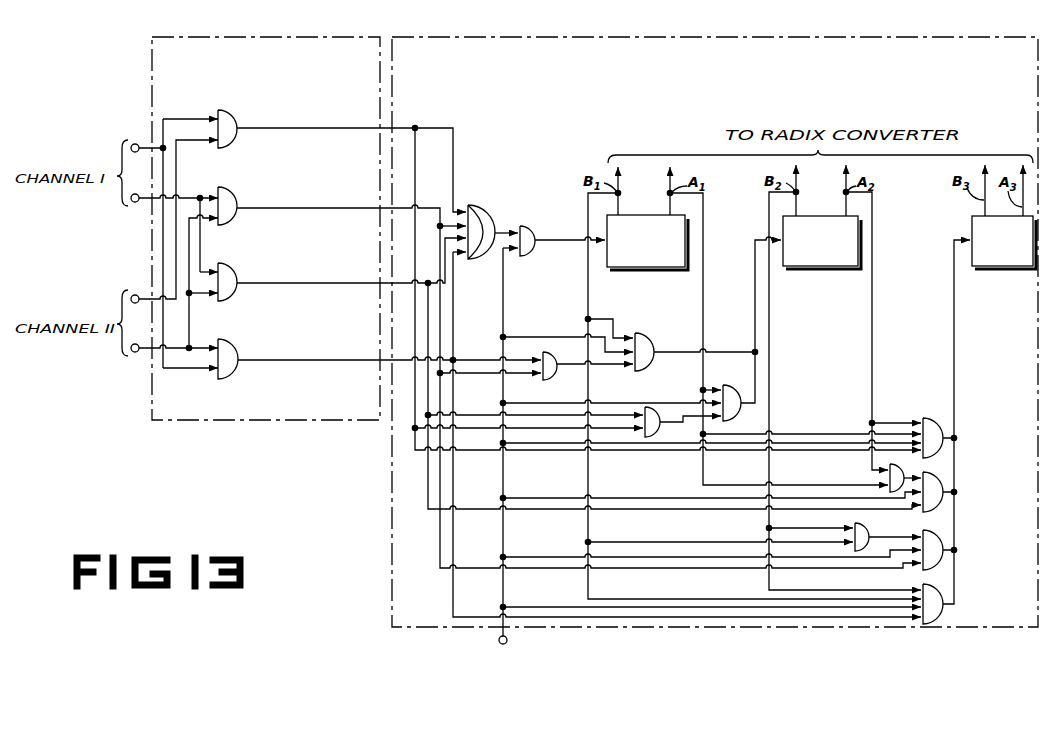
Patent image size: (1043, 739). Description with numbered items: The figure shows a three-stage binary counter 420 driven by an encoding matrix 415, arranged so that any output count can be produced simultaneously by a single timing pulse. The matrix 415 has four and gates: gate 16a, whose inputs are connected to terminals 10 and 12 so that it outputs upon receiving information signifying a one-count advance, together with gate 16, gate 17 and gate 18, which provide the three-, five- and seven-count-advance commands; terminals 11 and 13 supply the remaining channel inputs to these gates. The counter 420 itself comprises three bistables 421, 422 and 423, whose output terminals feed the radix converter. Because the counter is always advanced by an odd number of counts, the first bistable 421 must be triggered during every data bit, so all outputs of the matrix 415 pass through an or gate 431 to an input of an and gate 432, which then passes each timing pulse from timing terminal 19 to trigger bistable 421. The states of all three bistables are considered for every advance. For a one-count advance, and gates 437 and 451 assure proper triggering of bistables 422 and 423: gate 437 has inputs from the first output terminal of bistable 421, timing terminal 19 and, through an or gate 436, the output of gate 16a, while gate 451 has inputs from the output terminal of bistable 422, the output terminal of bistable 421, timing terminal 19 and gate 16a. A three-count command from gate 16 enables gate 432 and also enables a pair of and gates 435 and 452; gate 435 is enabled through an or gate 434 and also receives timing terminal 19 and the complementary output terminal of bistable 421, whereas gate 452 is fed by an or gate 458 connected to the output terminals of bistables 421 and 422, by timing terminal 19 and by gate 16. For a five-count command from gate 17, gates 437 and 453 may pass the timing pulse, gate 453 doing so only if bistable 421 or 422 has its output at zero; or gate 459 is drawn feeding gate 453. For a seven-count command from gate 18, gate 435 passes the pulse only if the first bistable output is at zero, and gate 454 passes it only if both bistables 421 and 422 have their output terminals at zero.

The terminal 10 is at (140, 139).
The terminal 11 is at (140, 188).
The terminal 12 is at (137, 295).
The terminal 13 is at (137, 344).
The and gate 16a is at (216, 110).
The and gate 16 is at (218, 188).
The and gate 17 is at (218, 264).
The and gate 18 is at (218, 340).
The timing terminal 19 is at (498, 640).
The encoding matrix 415 is at (322, 81).
The binary counter 420 is at (687, 74).
The bistable 421 is at (625, 268).
The bistable 422 is at (798, 267).
The bistable 423 is at (978, 267).
The or gate 431 is at (486, 205).
The and gate 432 is at (548, 218).
The or gate 434 is at (558, 378).
The and gate 435 is at (668, 330).
The or gate 436 is at (665, 398).
The and gate 437 is at (737, 392).
The and gate 451 is at (930, 418).
The and gate 452 is at (938, 474).
The and gate 453 is at (938, 532).
The and gate 454 is at (950, 604).
The or gate 458 is at (886, 486).
The or gate 459 is at (862, 524).